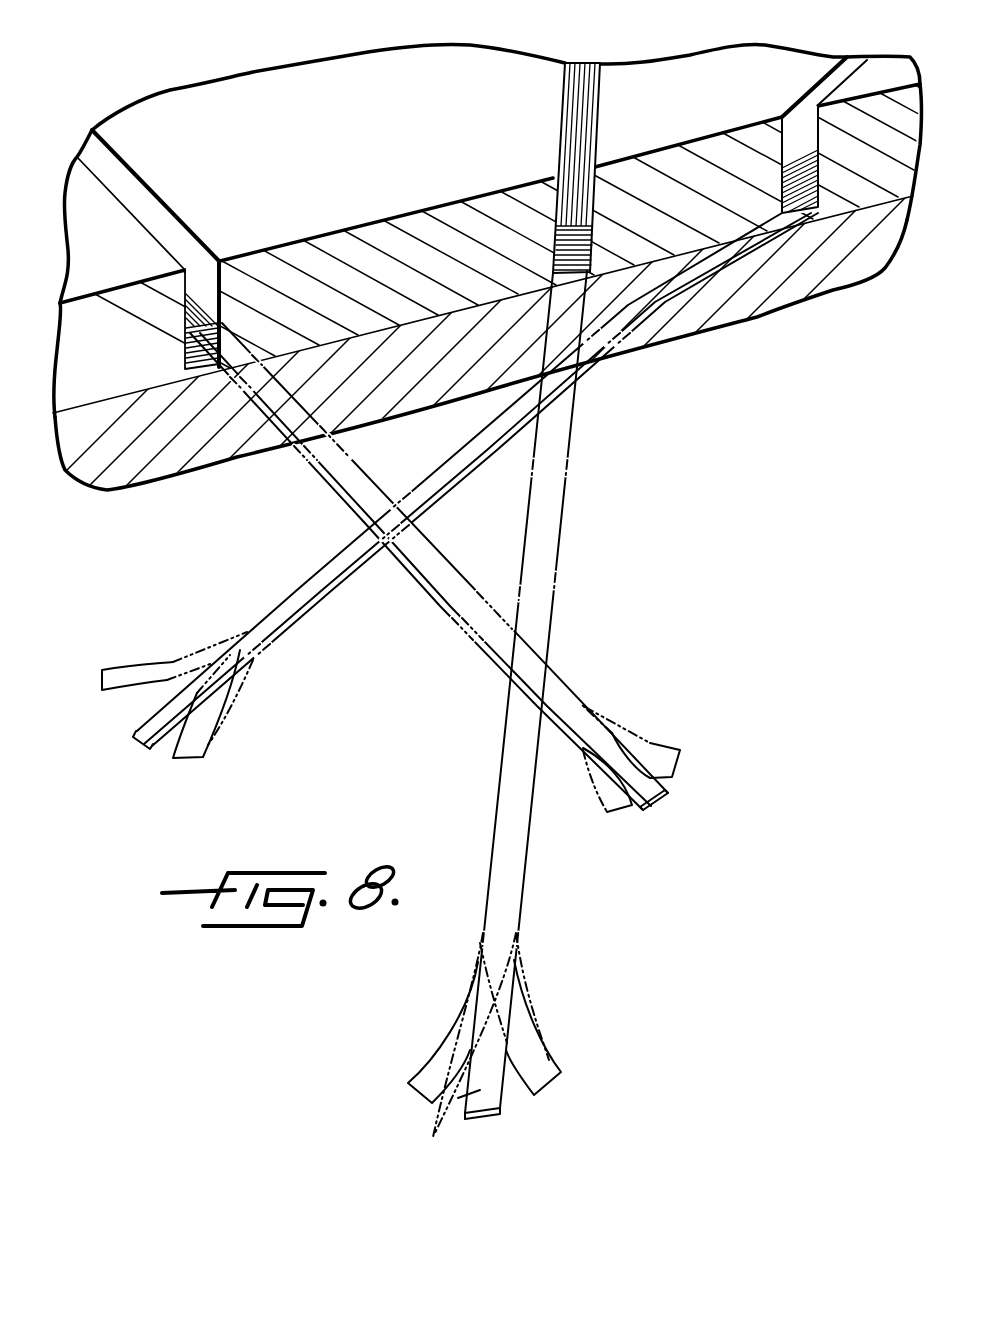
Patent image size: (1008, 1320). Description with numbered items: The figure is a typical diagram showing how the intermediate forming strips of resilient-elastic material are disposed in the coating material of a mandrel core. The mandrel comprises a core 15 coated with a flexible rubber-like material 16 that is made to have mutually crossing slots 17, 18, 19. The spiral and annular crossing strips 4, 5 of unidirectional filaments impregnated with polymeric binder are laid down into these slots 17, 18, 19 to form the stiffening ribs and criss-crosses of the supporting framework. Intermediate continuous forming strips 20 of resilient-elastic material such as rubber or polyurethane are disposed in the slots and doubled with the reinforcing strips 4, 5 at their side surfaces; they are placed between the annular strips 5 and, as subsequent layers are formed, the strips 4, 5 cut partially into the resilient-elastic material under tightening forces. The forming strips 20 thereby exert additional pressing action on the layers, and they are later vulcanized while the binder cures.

The spiral crossing strip 4 is at (125, 668).
The annular crossing strip 5 is at (550, 1063).
The core 15 is at (147, 442).
The rubber-like material 16 is at (112, 318).
The slot 17 is at (142, 200).
The slot 18 is at (560, 112).
The slot 19 is at (812, 86).
The intermediate continuous forming strip 20 is at (153, 747).